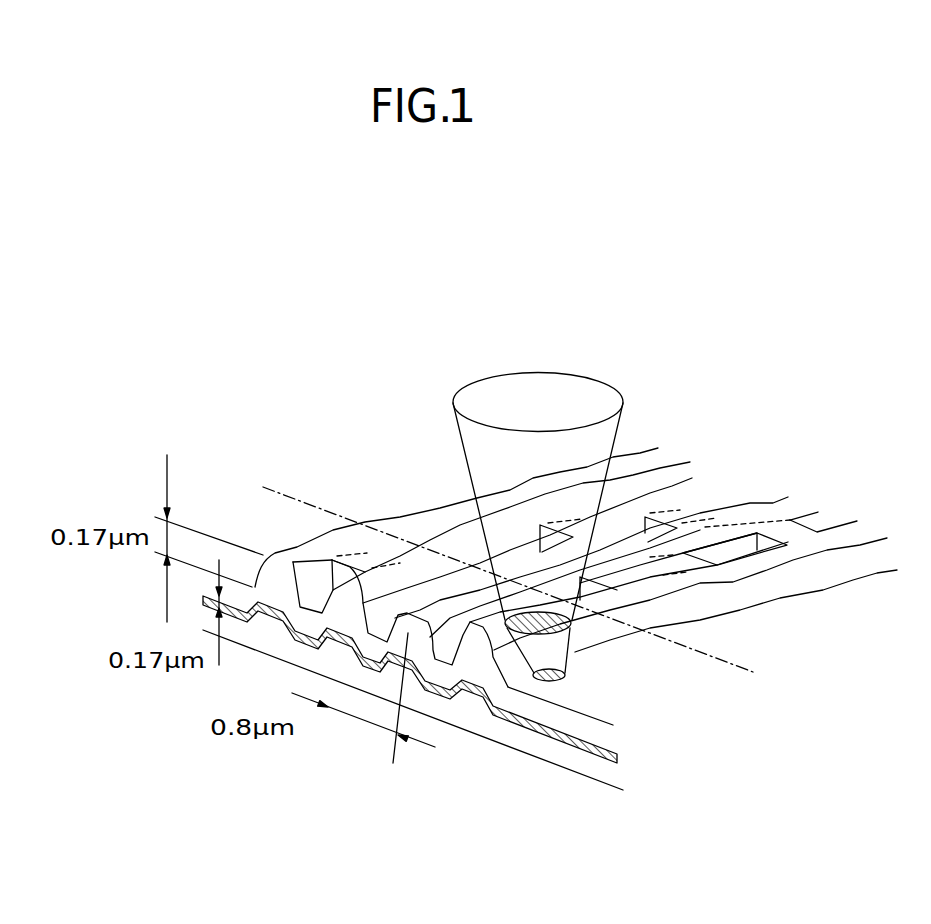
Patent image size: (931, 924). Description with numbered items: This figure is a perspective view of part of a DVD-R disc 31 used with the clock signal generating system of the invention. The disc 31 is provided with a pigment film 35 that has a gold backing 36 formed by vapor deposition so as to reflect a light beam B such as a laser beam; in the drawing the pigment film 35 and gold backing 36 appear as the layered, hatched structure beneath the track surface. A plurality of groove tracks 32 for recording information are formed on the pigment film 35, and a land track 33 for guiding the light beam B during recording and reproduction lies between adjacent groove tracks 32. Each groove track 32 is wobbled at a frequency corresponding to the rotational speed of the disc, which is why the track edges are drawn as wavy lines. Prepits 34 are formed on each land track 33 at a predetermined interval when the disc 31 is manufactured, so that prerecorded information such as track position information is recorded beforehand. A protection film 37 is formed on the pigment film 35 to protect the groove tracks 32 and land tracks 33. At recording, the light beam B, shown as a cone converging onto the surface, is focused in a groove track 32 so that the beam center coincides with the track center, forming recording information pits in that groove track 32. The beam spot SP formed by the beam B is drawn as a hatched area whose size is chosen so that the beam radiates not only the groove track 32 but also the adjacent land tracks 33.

The DVD-R disc 31 is at (720, 763).
The groove track 32 is at (640, 457).
The land track 33 is at (297, 560).
The prepit 34 is at (682, 512).
The pigment film 35 is at (593, 705).
The gold backing 36 is at (567, 743).
The protection film 37 is at (290, 490).
The light beam B is at (624, 413).
The beam spot SP is at (578, 648).